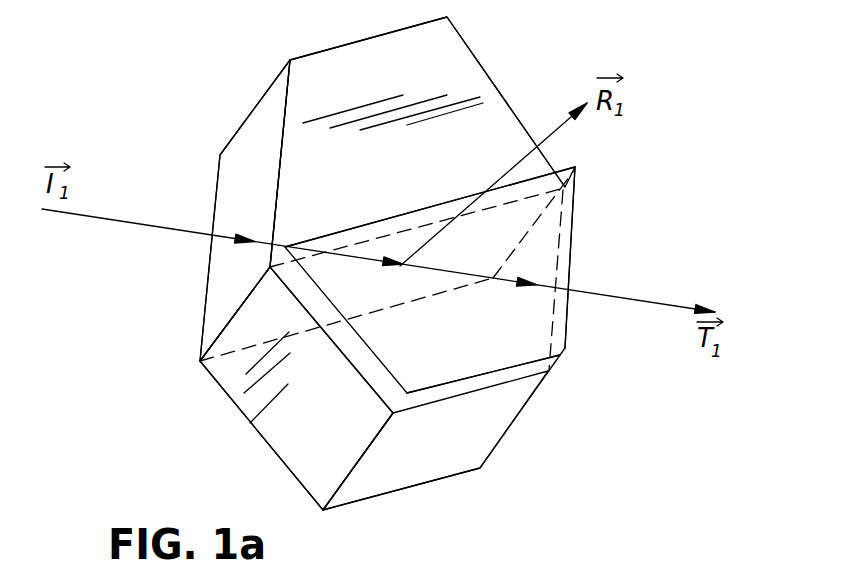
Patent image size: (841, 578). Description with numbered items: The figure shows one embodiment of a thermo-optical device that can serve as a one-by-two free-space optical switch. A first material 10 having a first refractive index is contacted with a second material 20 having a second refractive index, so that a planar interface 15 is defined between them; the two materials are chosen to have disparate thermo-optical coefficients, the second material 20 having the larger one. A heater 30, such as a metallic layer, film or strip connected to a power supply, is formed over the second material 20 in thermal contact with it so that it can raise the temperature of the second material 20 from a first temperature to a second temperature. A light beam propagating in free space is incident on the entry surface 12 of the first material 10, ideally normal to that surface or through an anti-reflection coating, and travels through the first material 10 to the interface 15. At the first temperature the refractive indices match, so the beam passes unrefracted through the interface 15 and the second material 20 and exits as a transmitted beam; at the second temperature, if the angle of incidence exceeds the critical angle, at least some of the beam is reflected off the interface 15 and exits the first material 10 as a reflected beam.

The first material 10 is at (427, 52).
The entry surface 12 is at (242, 167).
The interface 15 is at (200, 361).
The second material 20 is at (422, 465).
The heater 30 is at (527, 268).